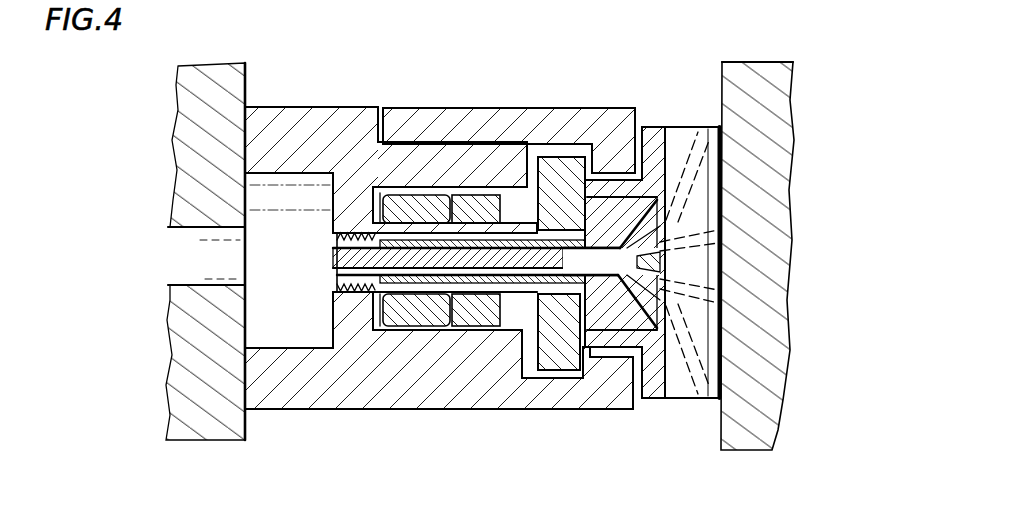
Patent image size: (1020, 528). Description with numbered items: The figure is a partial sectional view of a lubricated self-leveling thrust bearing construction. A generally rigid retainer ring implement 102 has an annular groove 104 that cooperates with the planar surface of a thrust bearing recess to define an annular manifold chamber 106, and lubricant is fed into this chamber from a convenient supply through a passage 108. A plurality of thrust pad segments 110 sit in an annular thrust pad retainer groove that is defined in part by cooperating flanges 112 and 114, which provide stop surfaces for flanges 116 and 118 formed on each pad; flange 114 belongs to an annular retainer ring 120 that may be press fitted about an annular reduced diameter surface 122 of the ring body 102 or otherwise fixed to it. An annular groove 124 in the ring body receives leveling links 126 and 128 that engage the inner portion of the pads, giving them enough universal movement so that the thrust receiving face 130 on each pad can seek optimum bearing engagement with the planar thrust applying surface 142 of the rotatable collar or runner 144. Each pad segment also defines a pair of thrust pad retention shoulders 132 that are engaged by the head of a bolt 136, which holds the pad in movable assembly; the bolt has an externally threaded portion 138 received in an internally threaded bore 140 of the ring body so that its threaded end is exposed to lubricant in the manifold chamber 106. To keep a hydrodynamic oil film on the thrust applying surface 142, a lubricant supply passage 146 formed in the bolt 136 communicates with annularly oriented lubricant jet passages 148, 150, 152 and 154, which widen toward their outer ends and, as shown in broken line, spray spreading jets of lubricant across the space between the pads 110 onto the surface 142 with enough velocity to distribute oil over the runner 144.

The retainer ring implement 102 is at (313, 112).
The annular groove 104 is at (318, 337).
The annular manifold chamber 106 is at (262, 193).
The passage 108 is at (186, 278).
The thrust pad segments 110 is at (705, 127).
The flange 112 is at (612, 367).
The flange 114 is at (625, 210).
The flange 116 is at (521, 337).
The flange 118 is at (556, 157).
The annular retainer ring 120 is at (450, 113).
The annular reduced diameter surface 122 is at (406, 140).
The annular groove 124 is at (410, 333).
The leveling links 126 is at (385, 320).
The leveling links 128 is at (477, 317).
The thrust receiving face 130 is at (722, 176).
The thrust pad retention shoulders 132 is at (565, 352).
The bolt 136 is at (455, 242).
The externally threaded portion 138 is at (338, 296).
The internally threaded bore 140 is at (336, 239).
The thrust applying surface 142 is at (718, 437).
The rotatable collar or runner 144 is at (765, 362).
The lubricant supply passage 146 is at (618, 174).
The lubricant jet passage 148 is at (668, 308).
The lubricant jet passage 150 is at (668, 286).
The lubricant jet passage 152 is at (668, 248).
The lubricant jet passage 154 is at (690, 213).